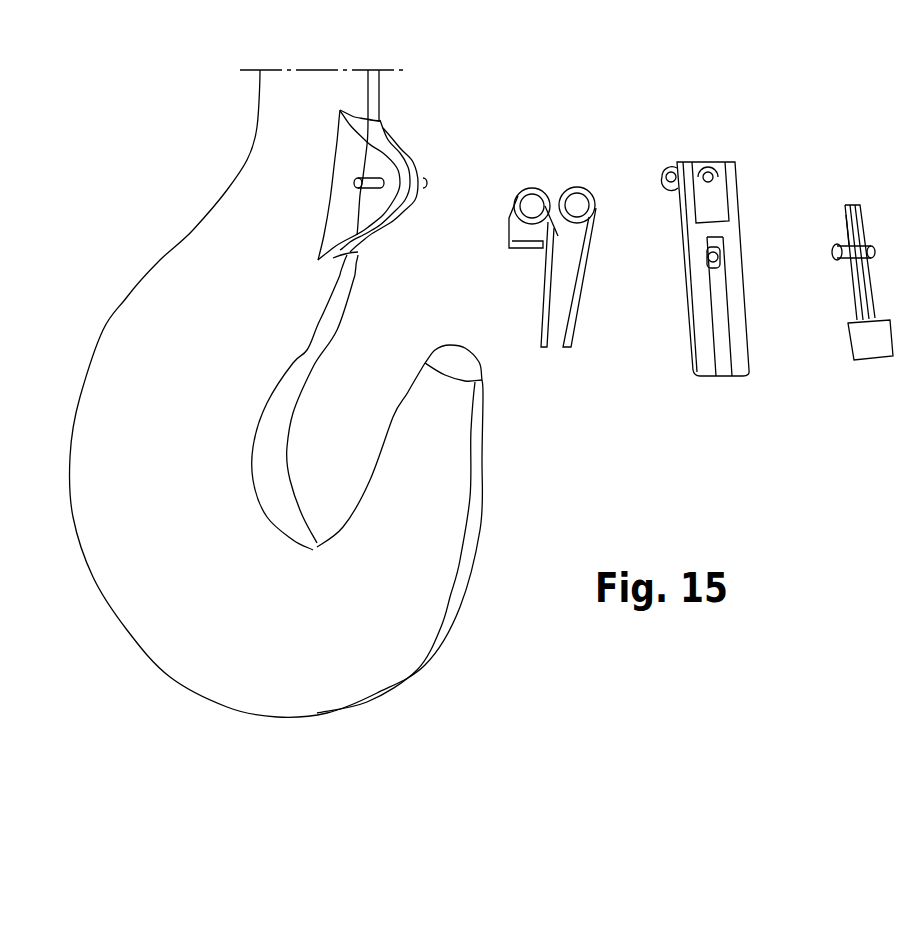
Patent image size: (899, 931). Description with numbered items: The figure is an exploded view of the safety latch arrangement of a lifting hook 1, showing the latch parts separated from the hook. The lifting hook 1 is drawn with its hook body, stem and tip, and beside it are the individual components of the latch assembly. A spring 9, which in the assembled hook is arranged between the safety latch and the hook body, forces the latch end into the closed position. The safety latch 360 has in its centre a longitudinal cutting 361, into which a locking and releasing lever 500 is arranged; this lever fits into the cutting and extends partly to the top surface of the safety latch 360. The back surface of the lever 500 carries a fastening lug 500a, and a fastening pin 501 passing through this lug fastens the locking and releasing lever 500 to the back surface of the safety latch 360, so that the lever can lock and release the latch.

The lifting hook 1 is at (214, 158).
The spring 9 is at (536, 181).
The safety latch 360 is at (682, 289).
The longitudinal cutting 361 is at (722, 333).
The locking and releasing lever 500 is at (830, 270).
The fastening lug 500a is at (843, 240).
The fastening pin 501 is at (826, 253).